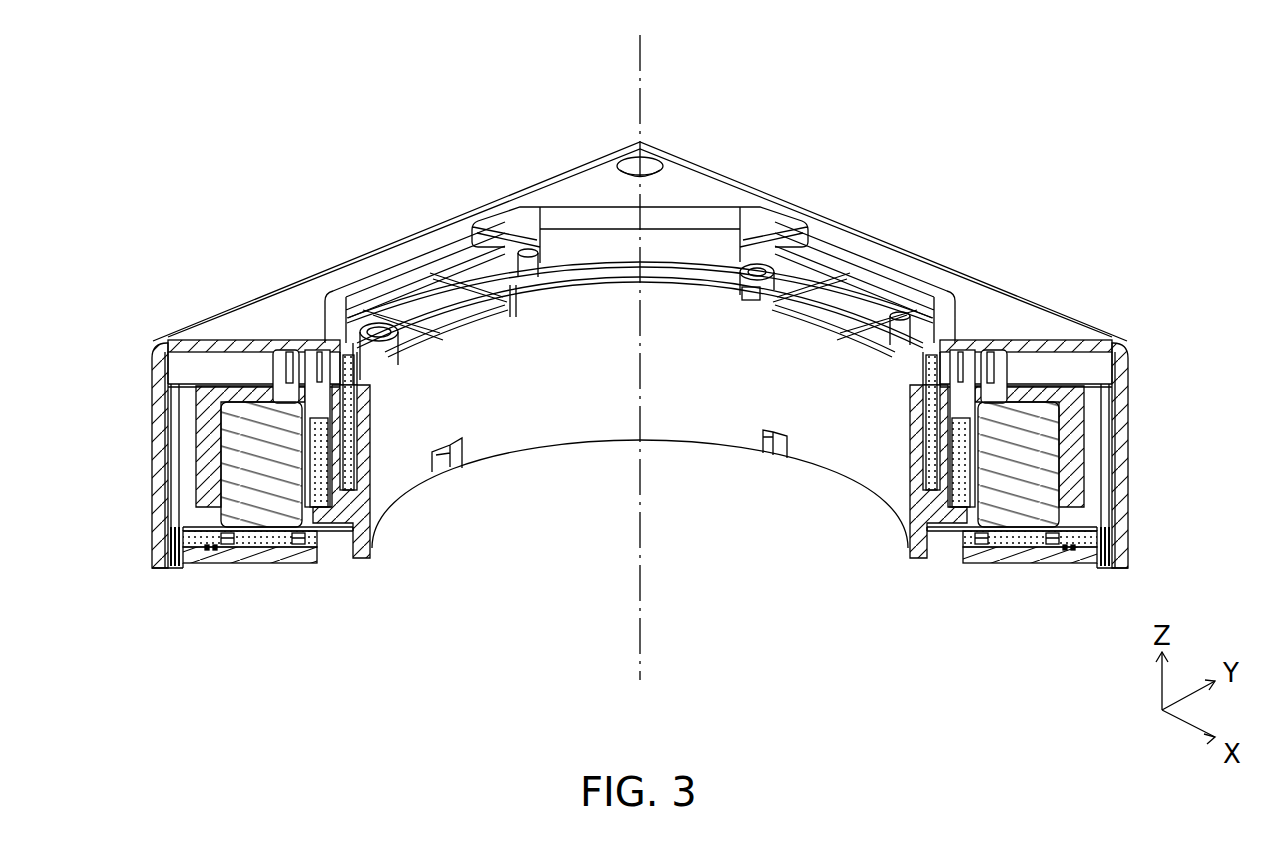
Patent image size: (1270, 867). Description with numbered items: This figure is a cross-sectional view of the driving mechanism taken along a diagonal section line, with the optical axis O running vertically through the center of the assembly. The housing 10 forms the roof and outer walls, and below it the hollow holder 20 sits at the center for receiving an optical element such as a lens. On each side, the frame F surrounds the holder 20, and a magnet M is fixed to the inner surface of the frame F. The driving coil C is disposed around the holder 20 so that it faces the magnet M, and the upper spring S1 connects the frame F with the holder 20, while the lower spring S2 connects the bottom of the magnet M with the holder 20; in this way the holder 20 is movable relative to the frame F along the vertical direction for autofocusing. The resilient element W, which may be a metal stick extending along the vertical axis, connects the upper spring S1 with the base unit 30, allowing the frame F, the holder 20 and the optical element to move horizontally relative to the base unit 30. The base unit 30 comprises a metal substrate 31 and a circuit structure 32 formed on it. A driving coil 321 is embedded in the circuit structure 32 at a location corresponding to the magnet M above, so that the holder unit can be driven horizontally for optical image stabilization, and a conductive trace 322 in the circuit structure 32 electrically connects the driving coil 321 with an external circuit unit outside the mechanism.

The optical axis O is at (650, 47).
The housing 10 is at (694, 193).
The hollow holder 20 is at (573, 444).
The upper spring S1 is at (1073, 372).
The frame F is at (1073, 403).
The resilient element W is at (1102, 437).
The magnet M is at (1043, 470).
The lower spring S2 is at (1083, 522).
The base unit 30 is at (617, 571).
The metal substrate 31 is at (1095, 560).
The circuit structure 32 is at (1097, 540).
The driving coil 321 is at (983, 545).
The conductive trace 322 is at (1065, 551).
The driving coil C is at (919, 558).